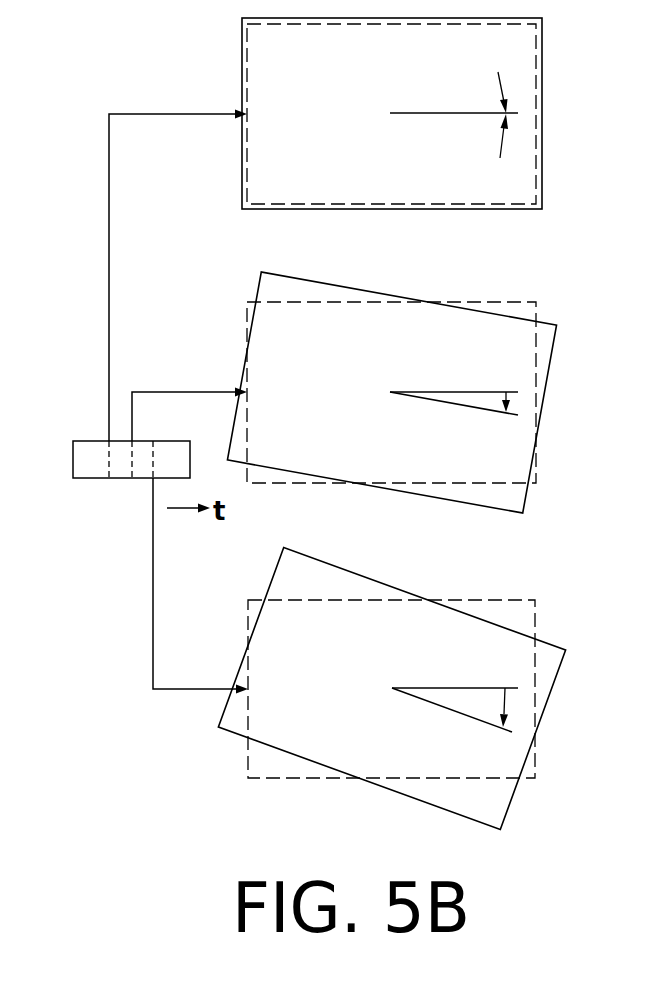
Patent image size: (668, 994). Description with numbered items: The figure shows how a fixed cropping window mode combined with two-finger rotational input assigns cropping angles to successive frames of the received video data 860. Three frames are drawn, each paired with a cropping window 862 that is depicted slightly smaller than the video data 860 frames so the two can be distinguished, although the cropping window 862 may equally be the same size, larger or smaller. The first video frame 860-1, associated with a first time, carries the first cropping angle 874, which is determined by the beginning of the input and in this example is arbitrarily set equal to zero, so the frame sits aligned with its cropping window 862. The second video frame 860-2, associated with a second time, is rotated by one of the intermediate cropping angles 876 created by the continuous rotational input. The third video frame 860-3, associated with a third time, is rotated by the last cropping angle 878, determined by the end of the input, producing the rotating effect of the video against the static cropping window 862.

The received video data 860 is at (90, 478).
The first video frame 860-1 is at (543, 69).
The second video frame 860-2 is at (553, 351).
The third video frame 860-3 is at (560, 668).
The cropping window 862 is at (308, 24).
The first cropping angle 874 is at (500, 140).
The intermediate cropping angles 876 is at (512, 402).
The last cropping angle 878 is at (512, 708).